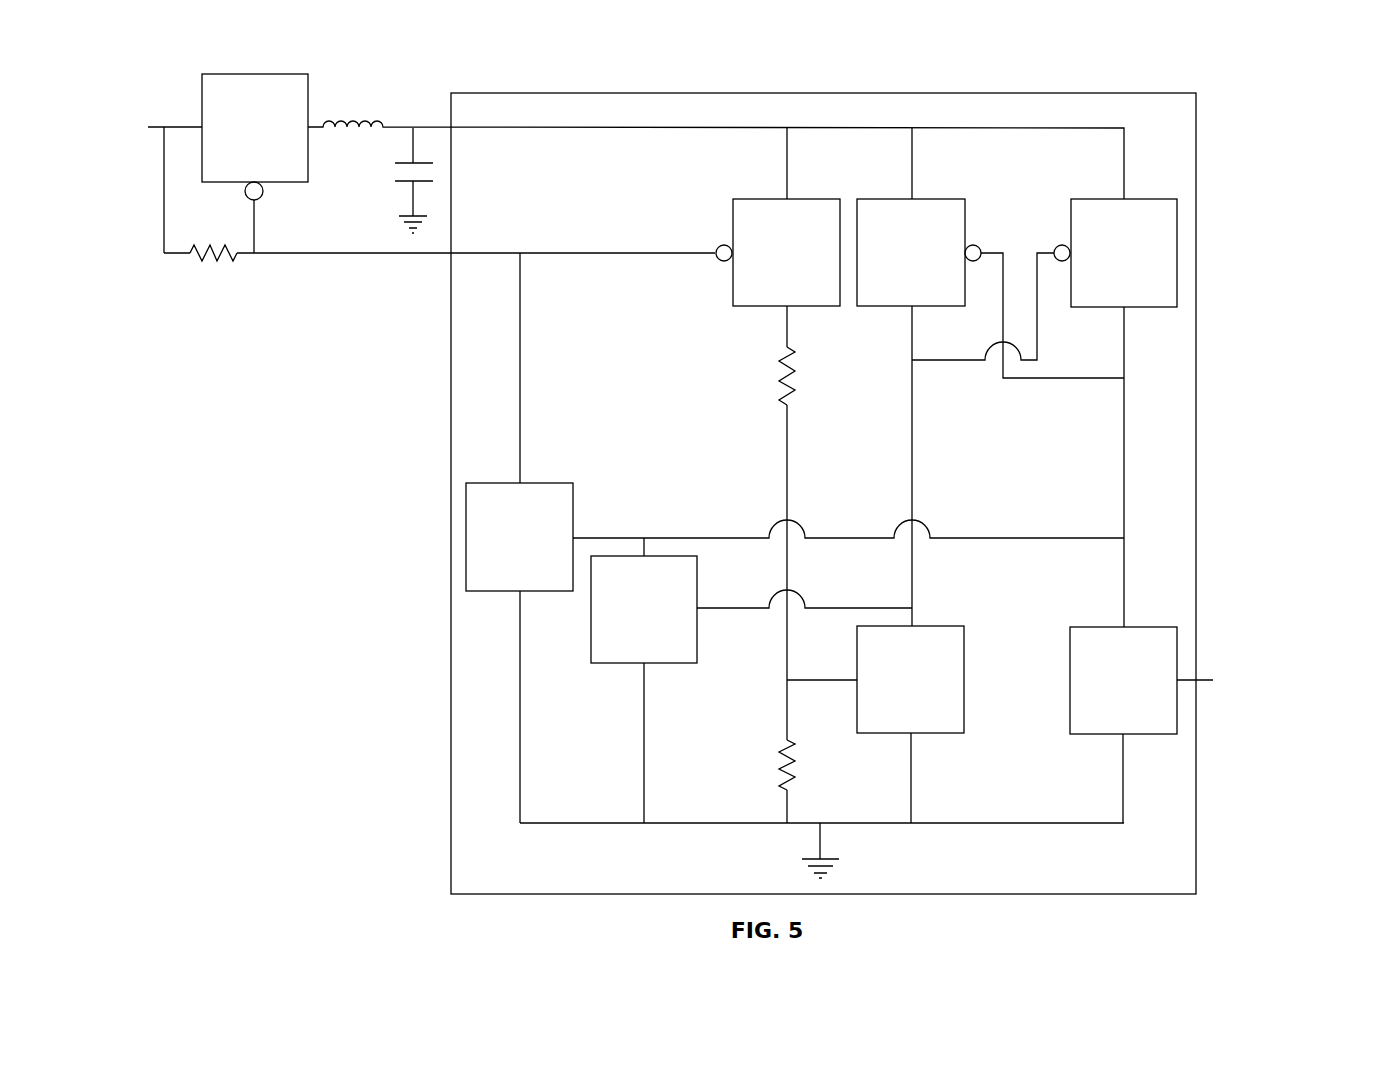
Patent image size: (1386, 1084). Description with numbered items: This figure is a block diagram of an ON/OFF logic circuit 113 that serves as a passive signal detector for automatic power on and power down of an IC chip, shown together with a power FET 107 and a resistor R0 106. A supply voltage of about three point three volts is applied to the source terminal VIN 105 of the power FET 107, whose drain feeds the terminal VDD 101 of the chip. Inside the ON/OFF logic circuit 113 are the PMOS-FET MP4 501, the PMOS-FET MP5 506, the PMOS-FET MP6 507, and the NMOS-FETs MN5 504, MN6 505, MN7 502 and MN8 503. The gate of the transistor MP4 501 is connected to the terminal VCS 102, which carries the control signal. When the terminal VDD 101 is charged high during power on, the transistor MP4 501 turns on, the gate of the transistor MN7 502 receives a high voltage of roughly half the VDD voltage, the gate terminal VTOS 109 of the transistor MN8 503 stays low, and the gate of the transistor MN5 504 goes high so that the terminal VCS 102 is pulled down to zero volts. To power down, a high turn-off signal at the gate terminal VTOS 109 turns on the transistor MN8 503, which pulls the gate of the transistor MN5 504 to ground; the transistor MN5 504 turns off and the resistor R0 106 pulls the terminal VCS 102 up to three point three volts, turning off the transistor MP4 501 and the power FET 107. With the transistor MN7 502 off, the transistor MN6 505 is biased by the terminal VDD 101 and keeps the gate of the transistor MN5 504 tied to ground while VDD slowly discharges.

The source terminal VIN 105 is at (168, 124).
The power FET 107 is at (241, 151).
The terminal VDD 101 is at (413, 125).
The terminal VCS 102 is at (413, 256).
The resistor R0 106 is at (212, 263).
The ON/OFF logic circuit 113 is at (1196, 235).
The gate terminal VTOS 109 is at (1262, 703).
The PMOS-FET MP4 501 is at (773, 272).
The PMOS-FET MP5 506 is at (898, 272).
The PMOS-FET MP6 507 is at (1110, 272).
The NMOS-FET MN5 504 is at (506, 558).
The NMOS-FET MN6 505 is at (630, 629).
The NMOS-FET MN7 502 is at (897, 699).
The NMOS-FET MN8 503 is at (1109, 700).